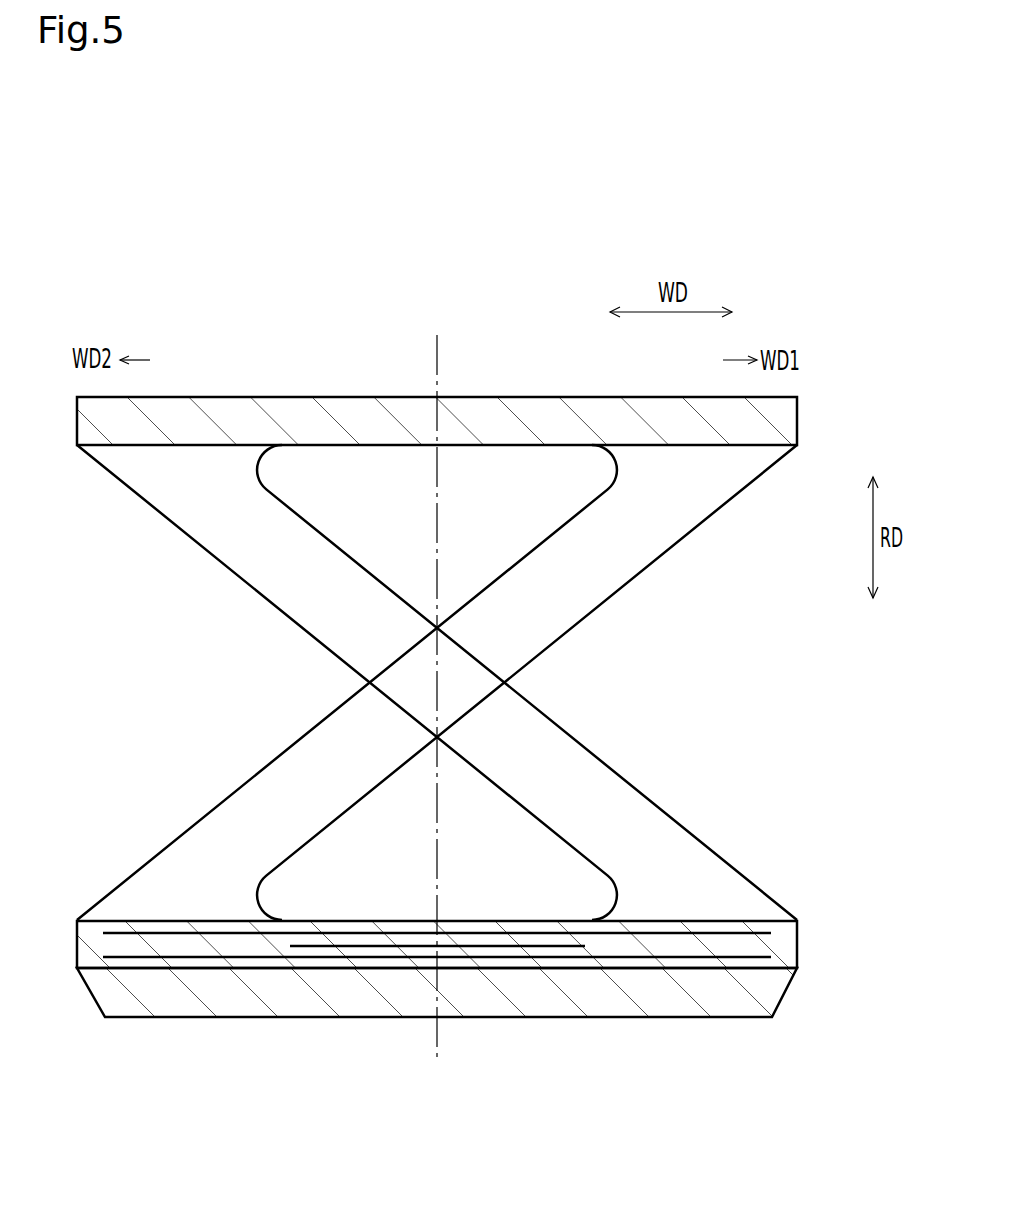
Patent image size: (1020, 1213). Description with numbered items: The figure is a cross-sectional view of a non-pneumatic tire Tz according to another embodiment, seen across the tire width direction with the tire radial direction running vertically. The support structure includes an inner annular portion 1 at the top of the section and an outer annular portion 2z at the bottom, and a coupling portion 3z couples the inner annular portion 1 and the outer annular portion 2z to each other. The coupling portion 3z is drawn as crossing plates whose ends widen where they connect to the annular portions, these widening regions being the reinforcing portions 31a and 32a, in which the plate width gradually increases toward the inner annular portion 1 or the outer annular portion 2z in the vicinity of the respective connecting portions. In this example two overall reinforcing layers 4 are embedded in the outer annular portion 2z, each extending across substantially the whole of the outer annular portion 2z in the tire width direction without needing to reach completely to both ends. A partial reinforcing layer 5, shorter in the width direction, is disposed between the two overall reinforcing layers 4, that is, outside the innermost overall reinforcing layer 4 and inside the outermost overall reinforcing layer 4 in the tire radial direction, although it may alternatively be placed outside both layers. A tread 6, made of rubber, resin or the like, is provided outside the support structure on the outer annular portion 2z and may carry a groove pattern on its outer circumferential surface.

The inner annular portion 1 is at (798, 422).
The outer annular portion 2z is at (798, 948).
The coupling portion 3z is at (418, 682).
The reinforcing portion 31a is at (203, 813).
The second spoke plate 32a is at (667, 812).
The overall reinforcing layer 4 is at (745, 932).
The partial reinforcing layer 5 is at (416, 947).
The tread 6 is at (787, 990).
The non-pneumatic tire Tz is at (317, 310).